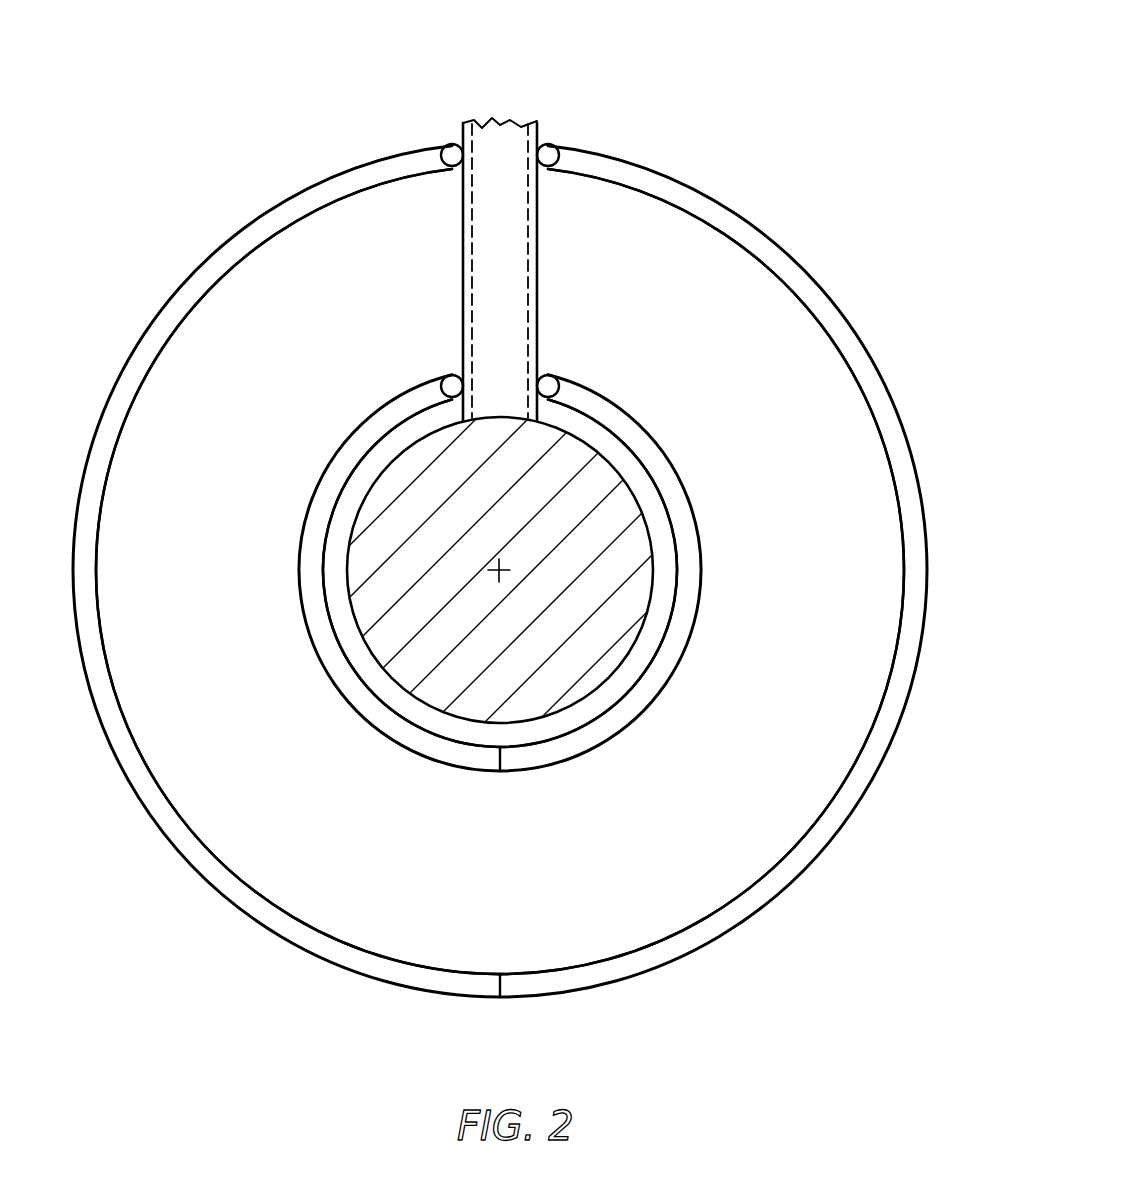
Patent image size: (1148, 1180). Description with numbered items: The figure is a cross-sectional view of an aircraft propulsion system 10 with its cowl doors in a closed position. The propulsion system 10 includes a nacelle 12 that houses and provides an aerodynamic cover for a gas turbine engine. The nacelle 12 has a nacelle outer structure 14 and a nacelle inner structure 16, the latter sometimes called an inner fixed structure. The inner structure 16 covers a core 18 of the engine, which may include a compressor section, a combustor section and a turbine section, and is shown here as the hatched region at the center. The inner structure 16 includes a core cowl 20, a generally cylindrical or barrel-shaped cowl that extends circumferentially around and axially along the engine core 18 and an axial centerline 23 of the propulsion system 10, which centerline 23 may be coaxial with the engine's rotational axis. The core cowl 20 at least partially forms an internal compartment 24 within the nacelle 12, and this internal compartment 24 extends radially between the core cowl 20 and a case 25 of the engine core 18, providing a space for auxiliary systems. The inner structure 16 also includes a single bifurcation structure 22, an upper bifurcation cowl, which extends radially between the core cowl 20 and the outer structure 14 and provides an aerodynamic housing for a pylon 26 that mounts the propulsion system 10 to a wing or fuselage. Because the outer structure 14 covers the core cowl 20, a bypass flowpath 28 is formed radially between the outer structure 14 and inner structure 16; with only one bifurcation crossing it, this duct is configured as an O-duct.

The aircraft propulsion system 10 is at (760, 84).
The nacelle 12 is at (500, 548).
The nacelle outer structure 14 is at (800, 180).
The nacelle inner structure 16 is at (534, 567).
The core 18 is at (672, 595).
The core cowl 20 is at (665, 425).
The bifurcation structure 22 is at (550, 252).
The axial centerline 23 is at (500, 573).
The internal compartment 24 is at (647, 650).
The case 25 is at (650, 532).
The pylon 26 is at (523, 305).
The bypass flowpath 28 is at (392, 841).